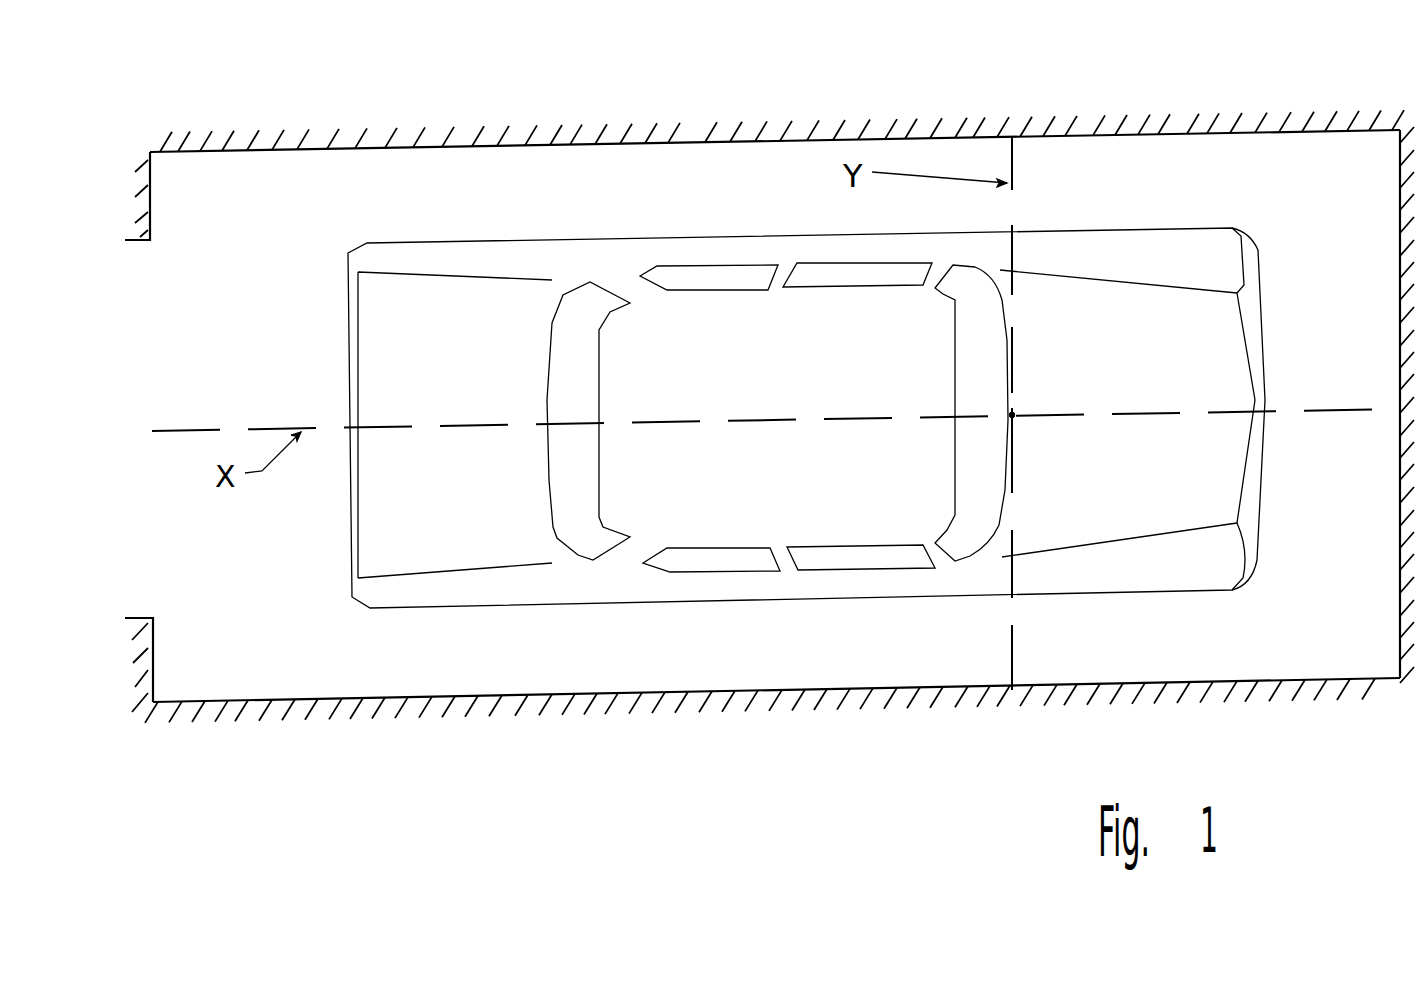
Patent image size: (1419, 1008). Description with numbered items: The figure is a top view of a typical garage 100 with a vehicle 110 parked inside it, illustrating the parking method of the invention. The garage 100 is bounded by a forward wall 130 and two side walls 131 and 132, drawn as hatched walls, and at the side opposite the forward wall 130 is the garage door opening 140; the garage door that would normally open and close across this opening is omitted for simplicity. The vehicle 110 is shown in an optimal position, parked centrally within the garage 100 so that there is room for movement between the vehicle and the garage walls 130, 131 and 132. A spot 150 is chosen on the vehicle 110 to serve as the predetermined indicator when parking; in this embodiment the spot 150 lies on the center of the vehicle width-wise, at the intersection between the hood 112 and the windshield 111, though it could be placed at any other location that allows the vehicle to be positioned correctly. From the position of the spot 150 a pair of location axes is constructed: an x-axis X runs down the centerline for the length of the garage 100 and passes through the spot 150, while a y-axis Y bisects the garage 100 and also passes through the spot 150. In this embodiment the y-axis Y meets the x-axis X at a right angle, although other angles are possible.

The garage 100 is at (935, 747).
The vehicle 110 is at (682, 510).
The windshield 111 is at (982, 297).
The hood 112 is at (1100, 297).
The forward wall 130 is at (1397, 568).
The side wall 131 is at (280, 695).
The side wall 132 is at (283, 153).
The garage door opening 140 is at (153, 574).
The spot 150 is at (1012, 421).